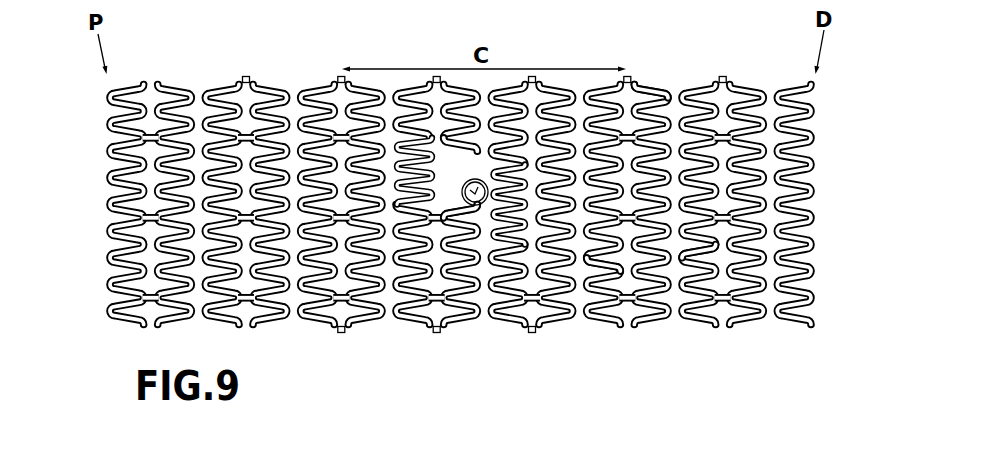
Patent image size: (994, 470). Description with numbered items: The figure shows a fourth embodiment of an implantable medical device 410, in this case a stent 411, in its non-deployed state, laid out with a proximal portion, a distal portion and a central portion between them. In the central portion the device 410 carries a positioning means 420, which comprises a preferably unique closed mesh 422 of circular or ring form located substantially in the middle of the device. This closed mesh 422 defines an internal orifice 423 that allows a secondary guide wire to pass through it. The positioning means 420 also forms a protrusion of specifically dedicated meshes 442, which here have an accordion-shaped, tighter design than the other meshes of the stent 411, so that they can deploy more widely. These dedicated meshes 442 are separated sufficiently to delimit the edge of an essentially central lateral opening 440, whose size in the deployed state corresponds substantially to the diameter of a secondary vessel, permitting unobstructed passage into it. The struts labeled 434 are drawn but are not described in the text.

The implantable medical device 410 is at (559, 84).
The stent 411 is at (655, 90).
The positioning means 420 is at (458, 176).
The closed mesh 422 is at (472, 179).
The internal orifice 423 is at (468, 200).
The struts 434 is at (577, 272).
The lateral opening 440 is at (448, 192).
The dedicated meshes 442 is at (415, 186).